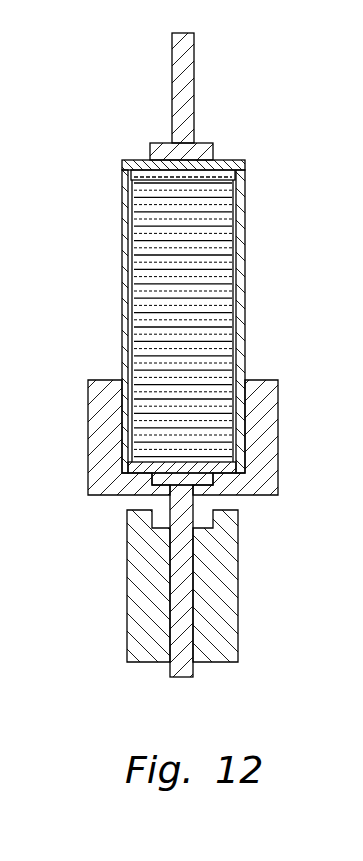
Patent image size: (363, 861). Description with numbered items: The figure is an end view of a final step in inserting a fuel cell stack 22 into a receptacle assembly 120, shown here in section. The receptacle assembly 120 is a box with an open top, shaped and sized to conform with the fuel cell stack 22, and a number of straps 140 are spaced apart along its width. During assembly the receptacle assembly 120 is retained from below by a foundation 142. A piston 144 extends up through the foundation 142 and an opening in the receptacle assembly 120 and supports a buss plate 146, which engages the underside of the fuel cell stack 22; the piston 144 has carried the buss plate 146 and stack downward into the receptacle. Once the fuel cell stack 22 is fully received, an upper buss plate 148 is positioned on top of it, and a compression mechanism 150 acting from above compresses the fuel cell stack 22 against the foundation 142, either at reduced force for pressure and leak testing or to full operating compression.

The compression mechanism 150 is at (195, 92).
The straps 140 is at (138, 160).
The upper buss plate 148 is at (245, 175).
The receptacle assembly 120 is at (122, 275).
The fuel cell stack 22 is at (233, 295).
The foundation 142 is at (88, 432).
The buss plate 146 is at (125, 463).
The piston 144 is at (193, 500).